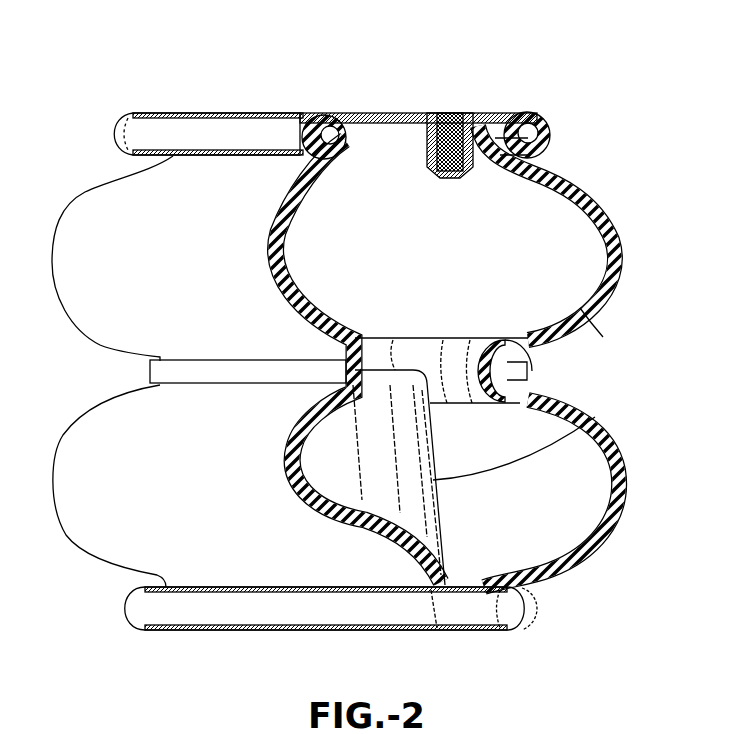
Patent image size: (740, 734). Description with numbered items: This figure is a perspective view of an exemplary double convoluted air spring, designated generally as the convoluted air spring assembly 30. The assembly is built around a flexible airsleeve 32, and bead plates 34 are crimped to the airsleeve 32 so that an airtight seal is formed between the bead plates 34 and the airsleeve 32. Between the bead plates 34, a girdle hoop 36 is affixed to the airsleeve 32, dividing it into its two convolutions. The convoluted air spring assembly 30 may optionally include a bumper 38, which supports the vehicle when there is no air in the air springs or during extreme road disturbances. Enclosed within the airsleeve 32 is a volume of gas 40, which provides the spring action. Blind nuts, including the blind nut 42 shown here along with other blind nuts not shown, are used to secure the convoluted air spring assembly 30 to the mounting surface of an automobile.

The convoluted air spring assembly 30 is at (617, 201).
The flexible airsleeve 32 is at (620, 270).
The bead plates 34 is at (550, 119).
The girdle hoop 36 is at (160, 372).
The bumper 38 is at (595, 417).
The volume of gas 40 is at (563, 312).
The blind nut 42 is at (452, 113).